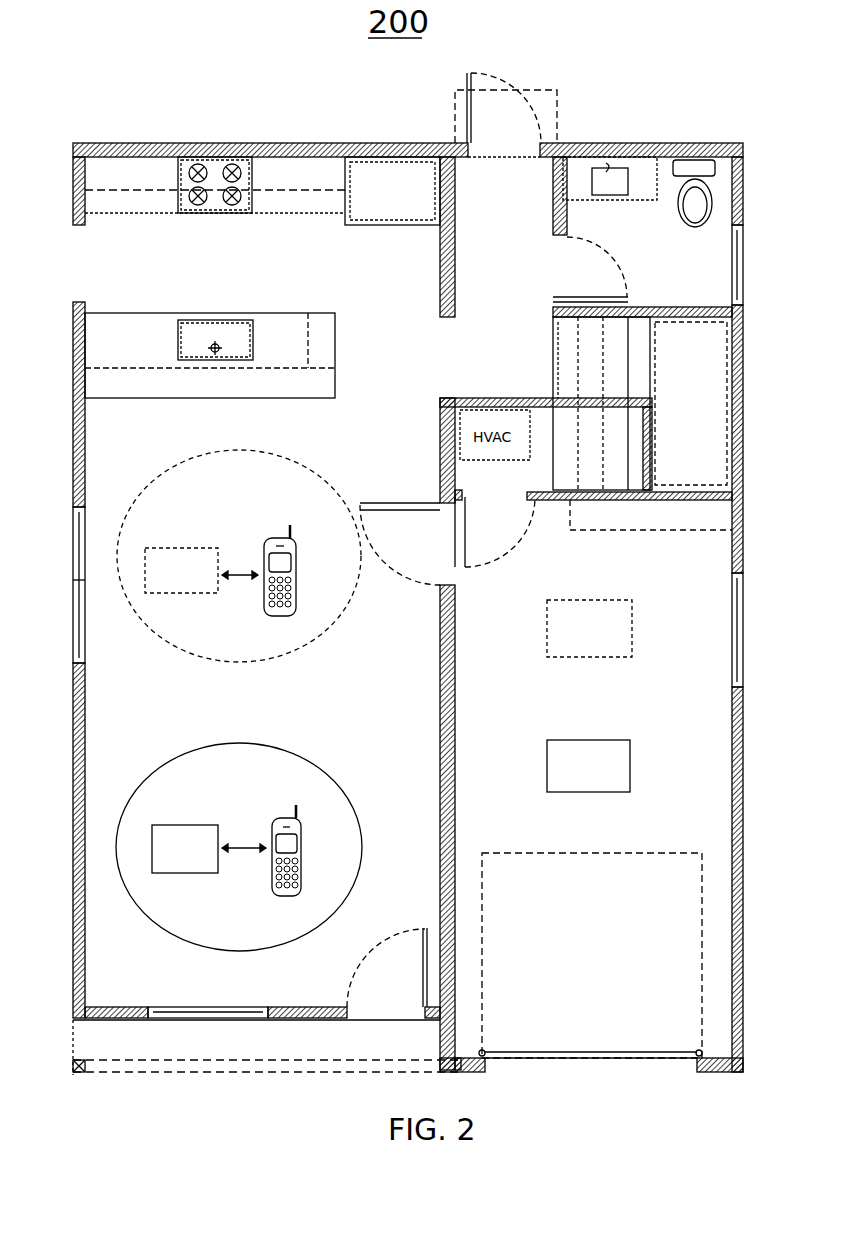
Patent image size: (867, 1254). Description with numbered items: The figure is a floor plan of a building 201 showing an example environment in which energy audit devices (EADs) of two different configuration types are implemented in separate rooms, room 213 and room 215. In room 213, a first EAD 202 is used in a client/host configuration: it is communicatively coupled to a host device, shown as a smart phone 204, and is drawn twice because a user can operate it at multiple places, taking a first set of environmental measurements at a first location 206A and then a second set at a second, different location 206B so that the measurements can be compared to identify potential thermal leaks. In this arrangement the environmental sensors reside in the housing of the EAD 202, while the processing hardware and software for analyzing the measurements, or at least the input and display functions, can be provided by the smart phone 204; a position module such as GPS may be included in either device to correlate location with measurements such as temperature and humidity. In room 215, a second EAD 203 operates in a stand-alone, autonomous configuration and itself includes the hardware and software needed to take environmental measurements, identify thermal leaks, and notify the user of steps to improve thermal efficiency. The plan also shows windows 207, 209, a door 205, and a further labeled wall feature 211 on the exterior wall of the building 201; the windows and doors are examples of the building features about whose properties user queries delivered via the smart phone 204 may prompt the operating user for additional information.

The building 201 is at (105, 152).
The first EAD 202 is at (173, 548).
The second EAD 203 is at (632, 600).
The smart phone 204 is at (297, 570).
The door 205 is at (400, 928).
The first location 206A is at (295, 752).
The second location 206B is at (315, 460).
The window 207 is at (78, 550).
The window 209 is at (185, 1007).
The window 211 is at (743, 605).
The room 213 is at (147, 702).
The room 215 is at (512, 702).